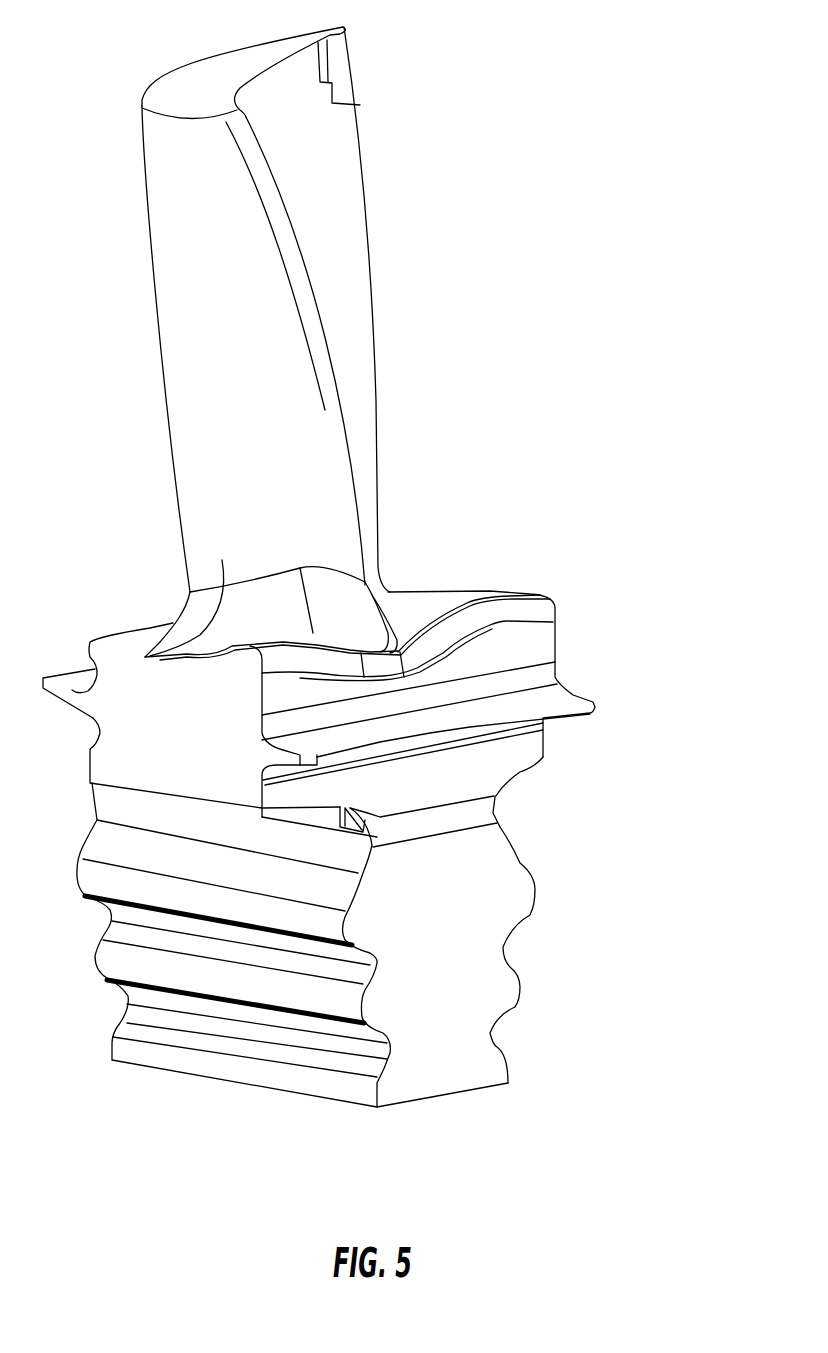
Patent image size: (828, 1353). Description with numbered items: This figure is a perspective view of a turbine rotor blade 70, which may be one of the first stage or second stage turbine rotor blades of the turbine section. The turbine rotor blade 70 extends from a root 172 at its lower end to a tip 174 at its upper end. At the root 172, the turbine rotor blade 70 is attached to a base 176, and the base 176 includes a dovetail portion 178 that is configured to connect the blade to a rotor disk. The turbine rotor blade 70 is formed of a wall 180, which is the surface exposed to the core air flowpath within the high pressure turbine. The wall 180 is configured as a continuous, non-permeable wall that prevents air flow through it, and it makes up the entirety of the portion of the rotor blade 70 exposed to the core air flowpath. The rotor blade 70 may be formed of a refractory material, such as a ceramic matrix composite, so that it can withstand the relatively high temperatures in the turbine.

The turbine rotor blade 70 is at (610, 210).
The root 172 is at (403, 612).
The tip 174 is at (180, 128).
The base 176 is at (591, 773).
The dovetail portion 178 is at (515, 987).
The wall 180 is at (200, 348).